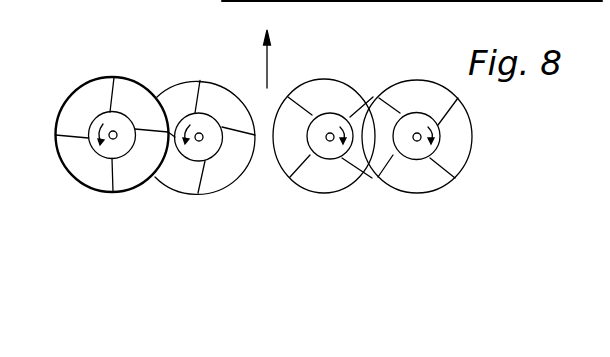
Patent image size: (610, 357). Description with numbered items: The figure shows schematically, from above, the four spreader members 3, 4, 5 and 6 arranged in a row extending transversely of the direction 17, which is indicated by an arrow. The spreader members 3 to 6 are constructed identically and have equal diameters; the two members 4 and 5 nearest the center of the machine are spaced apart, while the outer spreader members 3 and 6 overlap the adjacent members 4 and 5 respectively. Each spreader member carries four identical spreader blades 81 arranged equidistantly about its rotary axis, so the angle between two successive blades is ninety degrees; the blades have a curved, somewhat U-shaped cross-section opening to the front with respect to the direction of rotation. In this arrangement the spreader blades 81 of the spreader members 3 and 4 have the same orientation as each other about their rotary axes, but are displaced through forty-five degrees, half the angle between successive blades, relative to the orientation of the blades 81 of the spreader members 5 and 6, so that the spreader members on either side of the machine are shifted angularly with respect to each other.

The spreader member 3 is at (440, 89).
The spreader member 4 is at (360, 90).
The spreader member 5 is at (228, 88).
The spreader member 6 is at (83, 86).
The direction 17 is at (267, 68).
The spreader blades 81 is at (76, 140).